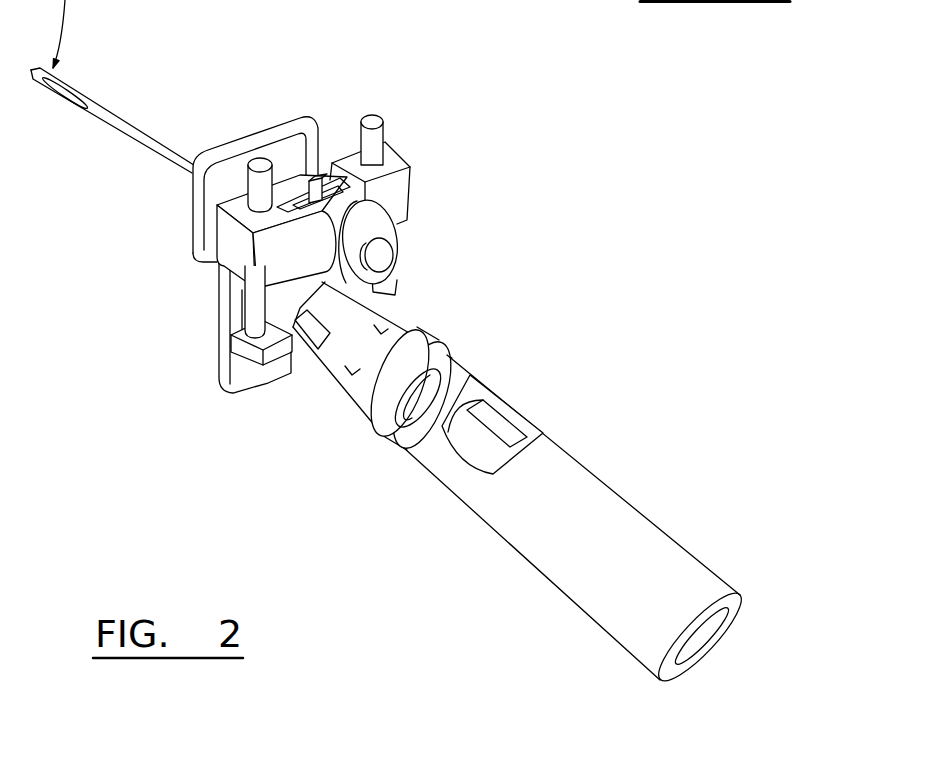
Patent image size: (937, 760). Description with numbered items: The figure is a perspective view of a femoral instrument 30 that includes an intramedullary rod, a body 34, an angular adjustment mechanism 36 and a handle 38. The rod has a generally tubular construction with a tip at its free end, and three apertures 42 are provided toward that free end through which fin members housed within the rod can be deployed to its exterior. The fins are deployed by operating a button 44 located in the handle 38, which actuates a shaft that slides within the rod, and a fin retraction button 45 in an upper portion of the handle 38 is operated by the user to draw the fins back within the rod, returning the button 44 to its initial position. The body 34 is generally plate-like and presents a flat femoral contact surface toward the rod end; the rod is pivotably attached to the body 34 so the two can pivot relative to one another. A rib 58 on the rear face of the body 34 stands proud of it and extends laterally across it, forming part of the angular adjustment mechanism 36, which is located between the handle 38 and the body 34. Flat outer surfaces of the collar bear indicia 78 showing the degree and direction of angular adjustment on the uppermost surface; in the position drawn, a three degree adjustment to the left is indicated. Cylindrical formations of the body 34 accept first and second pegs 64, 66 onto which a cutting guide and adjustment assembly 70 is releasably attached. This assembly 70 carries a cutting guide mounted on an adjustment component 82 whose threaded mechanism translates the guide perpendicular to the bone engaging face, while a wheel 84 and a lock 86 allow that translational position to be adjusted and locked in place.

The instrument 30 is at (418, 371).
The body 34 is at (218, 328).
The angular adjustment mechanism 36 is at (442, 326).
The handle 38 is at (604, 540).
The apertures 42 is at (68, 90).
The button 44 is at (705, 637).
The fin retraction button 45 is at (495, 428).
The rib 58 is at (282, 352).
The first peg 64 is at (260, 187).
The second peg 66 is at (372, 120).
The cutting guide and adjustment assembly 70 is at (421, 178).
The indicia 78 is at (407, 308).
The adjustment component 82 is at (413, 193).
The wheel 84 is at (322, 178).
The lock 86 is at (375, 224).